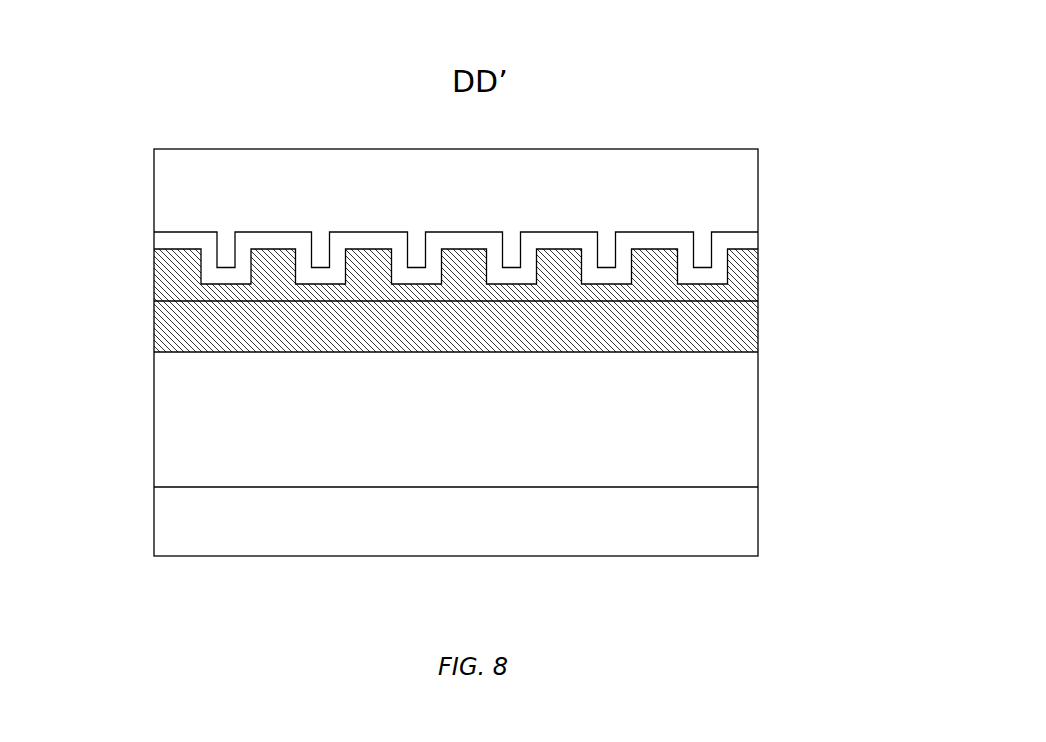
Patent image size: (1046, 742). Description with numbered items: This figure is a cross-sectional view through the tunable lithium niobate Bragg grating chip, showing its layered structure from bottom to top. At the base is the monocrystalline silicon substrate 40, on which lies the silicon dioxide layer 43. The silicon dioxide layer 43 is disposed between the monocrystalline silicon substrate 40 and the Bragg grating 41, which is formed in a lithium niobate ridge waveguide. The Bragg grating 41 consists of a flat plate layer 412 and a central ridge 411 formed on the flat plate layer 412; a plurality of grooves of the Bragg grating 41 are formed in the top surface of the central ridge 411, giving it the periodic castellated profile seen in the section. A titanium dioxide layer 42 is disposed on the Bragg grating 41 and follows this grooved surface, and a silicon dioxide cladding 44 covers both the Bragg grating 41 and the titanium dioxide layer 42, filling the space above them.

The monocrystalline silicon substrate 40 is at (218, 521).
The Bragg grating 41 is at (561, 319).
The central ridge 411 is at (742, 284).
The flat plate layer 412 is at (727, 327).
The titanium dioxide layer 42 is at (742, 243).
The silicon dioxide layer 43 is at (218, 420).
The silicon dioxide cladding 44 is at (185, 200).